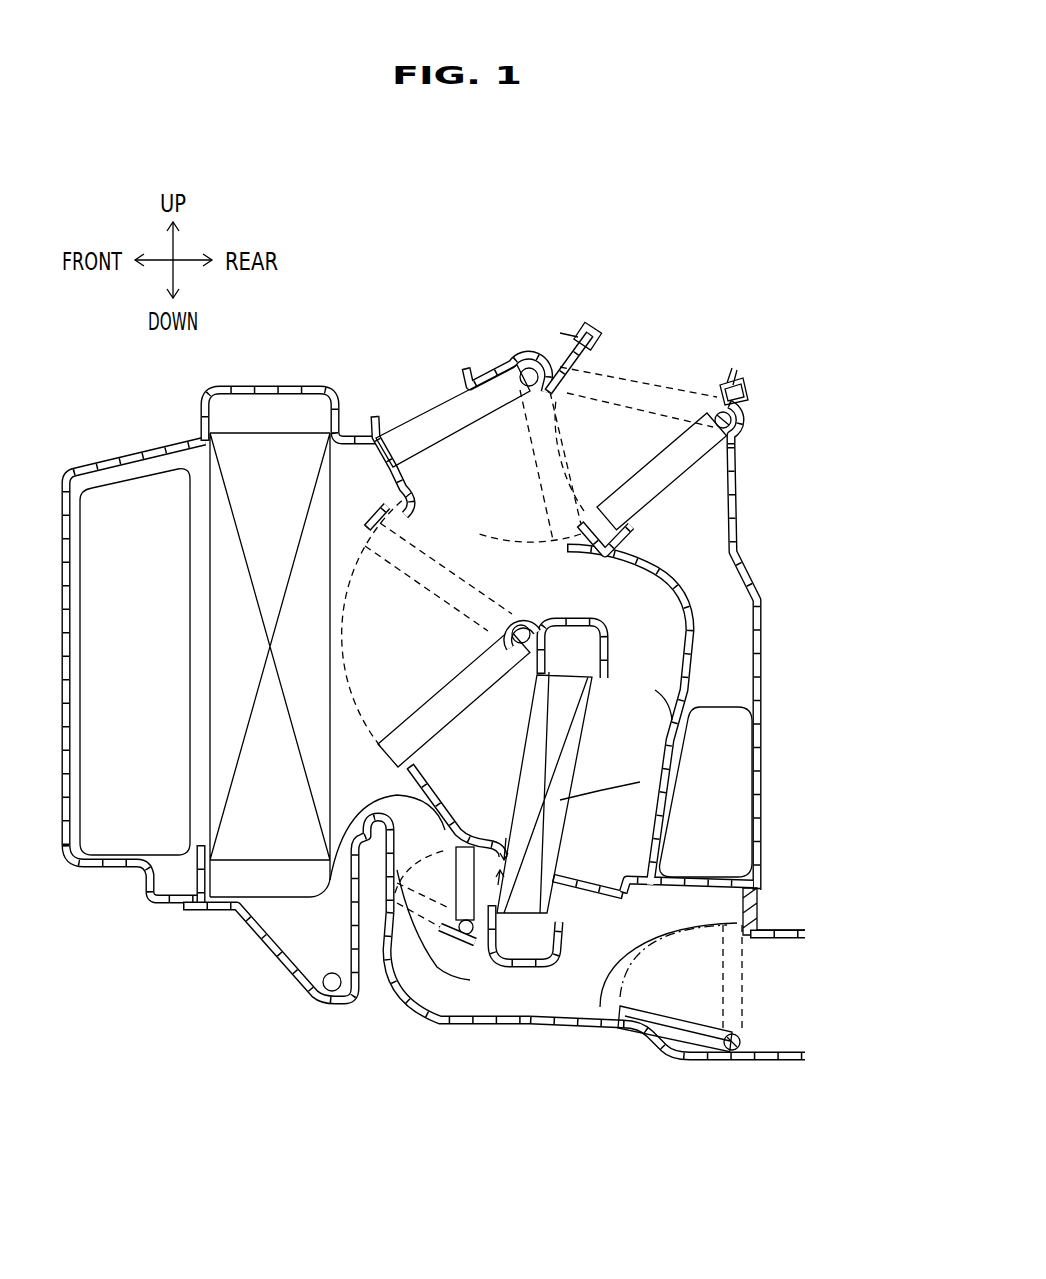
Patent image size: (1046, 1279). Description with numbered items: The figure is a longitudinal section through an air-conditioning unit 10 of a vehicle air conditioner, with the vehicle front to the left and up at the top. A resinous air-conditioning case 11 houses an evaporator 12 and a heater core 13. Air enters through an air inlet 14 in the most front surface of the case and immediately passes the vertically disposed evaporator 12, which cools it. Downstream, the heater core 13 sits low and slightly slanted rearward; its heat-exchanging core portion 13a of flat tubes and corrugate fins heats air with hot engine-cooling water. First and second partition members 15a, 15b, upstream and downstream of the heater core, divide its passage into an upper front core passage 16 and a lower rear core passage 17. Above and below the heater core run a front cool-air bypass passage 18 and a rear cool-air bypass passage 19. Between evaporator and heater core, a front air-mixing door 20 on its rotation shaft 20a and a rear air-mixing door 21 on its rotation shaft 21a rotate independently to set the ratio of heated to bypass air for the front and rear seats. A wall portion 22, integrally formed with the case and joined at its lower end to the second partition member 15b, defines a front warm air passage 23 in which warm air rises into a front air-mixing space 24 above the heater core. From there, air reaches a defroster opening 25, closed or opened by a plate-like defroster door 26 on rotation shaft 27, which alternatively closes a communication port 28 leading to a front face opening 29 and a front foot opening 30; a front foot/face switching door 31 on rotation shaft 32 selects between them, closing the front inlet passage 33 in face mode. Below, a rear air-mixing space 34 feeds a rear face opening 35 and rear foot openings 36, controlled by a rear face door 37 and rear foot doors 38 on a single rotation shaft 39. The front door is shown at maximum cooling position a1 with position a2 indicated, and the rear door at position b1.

The air-conditioning unit 10 is at (522, 342).
The air-conditioning case 11 is at (342, 393).
The evaporator 12 is at (235, 862).
The heater core 13 is at (592, 779).
The heat-exchanging core portion 13a is at (560, 800).
The air inlet 14 is at (117, 477).
The first partition member 15a is at (335, 952).
The second partition member 15b is at (590, 895).
The front core passage 16 is at (520, 760).
The rear core passage 17 is at (517, 877).
The front cool-air bypass passage 18 is at (377, 593).
The rear cool-air bypass passage 19 is at (455, 972).
The front air-mixing door 20 is at (433, 713).
The rotation shaft 20a is at (560, 603).
The rear air-mixing door 21 is at (403, 1000).
The rotation shaft 21a is at (470, 905).
The wall portion 22 is at (641, 836).
The front warm air passage 23 is at (637, 730).
The front air-mixing space 24 is at (463, 553).
The defroster opening 25 is at (417, 400).
The defroster door 26 is at (450, 413).
The rotation shaft 27 is at (533, 367).
The communication port 28 is at (590, 400).
The front face opening 29 is at (665, 357).
The front foot opening 30 is at (720, 842).
The front foot/face switching door 31 is at (655, 483).
The rotation shaft 32 is at (747, 423).
The front inlet passage 33 is at (700, 485).
The rear air-mixing space 34 is at (602, 1020).
The rear face opening 35 is at (783, 997).
The rear foot opening 36 is at (783, 997).
The rear face door 37 is at (677, 1032).
The rear foot door 38 is at (677, 1032).
The rotation shaft 39 is at (743, 1053).
The maximum cooling position a1 is at (380, 756).
The position a2 is at (433, 598).
The position b1 is at (457, 843).